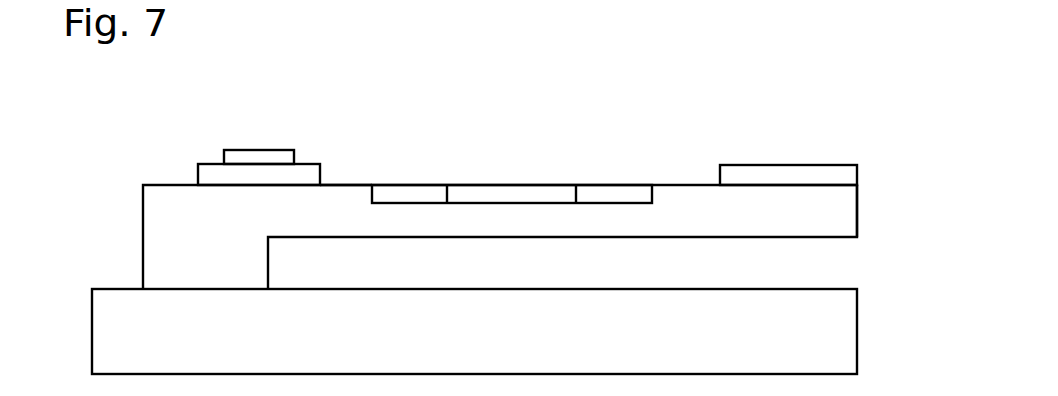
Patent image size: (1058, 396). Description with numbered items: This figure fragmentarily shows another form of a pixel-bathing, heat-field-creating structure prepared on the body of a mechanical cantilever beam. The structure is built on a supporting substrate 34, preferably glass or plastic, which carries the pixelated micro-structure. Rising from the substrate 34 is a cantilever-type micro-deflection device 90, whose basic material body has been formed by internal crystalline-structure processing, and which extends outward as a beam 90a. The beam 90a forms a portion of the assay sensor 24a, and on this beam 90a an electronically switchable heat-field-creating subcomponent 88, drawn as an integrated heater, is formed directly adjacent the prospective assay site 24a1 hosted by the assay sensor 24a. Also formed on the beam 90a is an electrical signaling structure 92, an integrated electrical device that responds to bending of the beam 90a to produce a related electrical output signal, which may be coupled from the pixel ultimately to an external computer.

The substrate 34 is at (490, 357).
The cantilever-type micro-deflection device 90 is at (141, 242).
The beam 90a is at (900, 203).
The electrical signaling structure 92 is at (215, 159).
The heat-field-creating subcomponent 88 is at (513, 183).
The assay sensor 24a is at (658, 88).
The assay site 24a1 is at (783, 163).